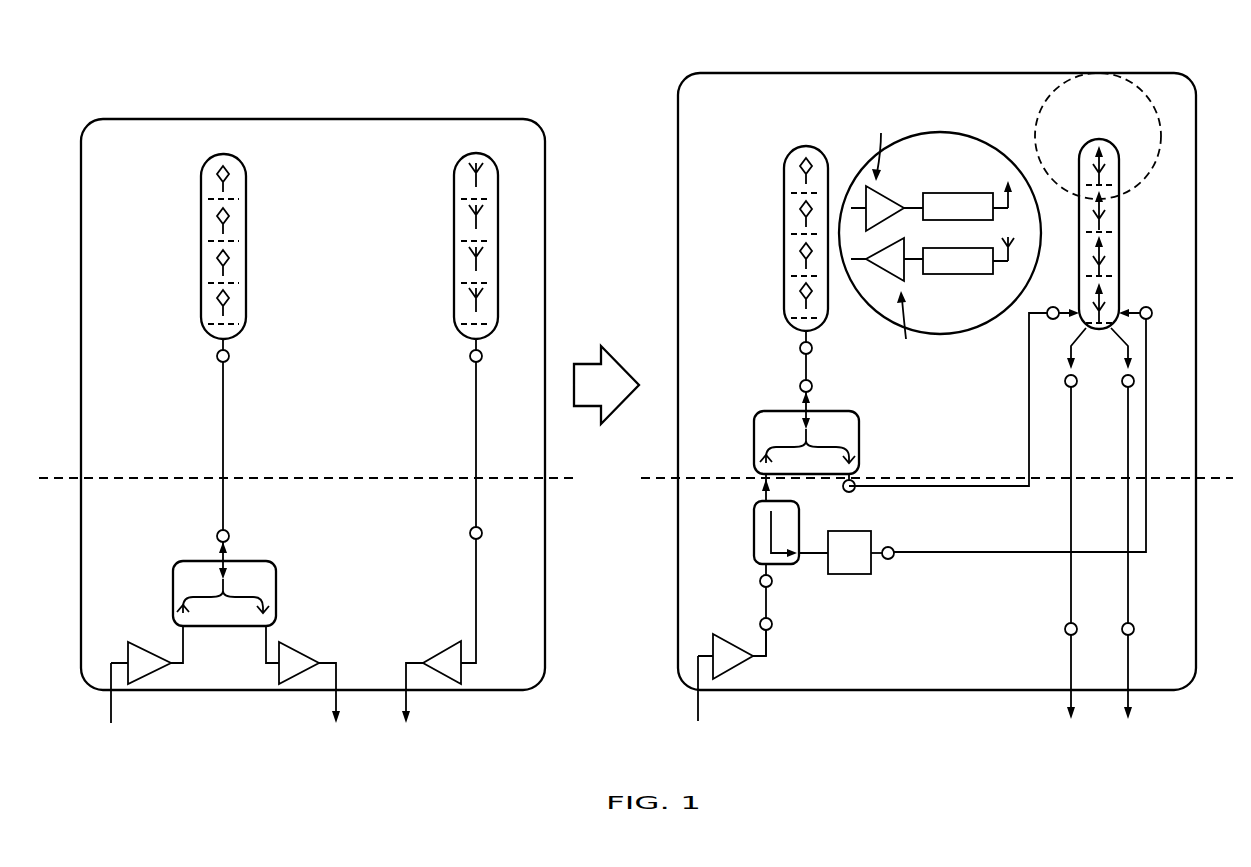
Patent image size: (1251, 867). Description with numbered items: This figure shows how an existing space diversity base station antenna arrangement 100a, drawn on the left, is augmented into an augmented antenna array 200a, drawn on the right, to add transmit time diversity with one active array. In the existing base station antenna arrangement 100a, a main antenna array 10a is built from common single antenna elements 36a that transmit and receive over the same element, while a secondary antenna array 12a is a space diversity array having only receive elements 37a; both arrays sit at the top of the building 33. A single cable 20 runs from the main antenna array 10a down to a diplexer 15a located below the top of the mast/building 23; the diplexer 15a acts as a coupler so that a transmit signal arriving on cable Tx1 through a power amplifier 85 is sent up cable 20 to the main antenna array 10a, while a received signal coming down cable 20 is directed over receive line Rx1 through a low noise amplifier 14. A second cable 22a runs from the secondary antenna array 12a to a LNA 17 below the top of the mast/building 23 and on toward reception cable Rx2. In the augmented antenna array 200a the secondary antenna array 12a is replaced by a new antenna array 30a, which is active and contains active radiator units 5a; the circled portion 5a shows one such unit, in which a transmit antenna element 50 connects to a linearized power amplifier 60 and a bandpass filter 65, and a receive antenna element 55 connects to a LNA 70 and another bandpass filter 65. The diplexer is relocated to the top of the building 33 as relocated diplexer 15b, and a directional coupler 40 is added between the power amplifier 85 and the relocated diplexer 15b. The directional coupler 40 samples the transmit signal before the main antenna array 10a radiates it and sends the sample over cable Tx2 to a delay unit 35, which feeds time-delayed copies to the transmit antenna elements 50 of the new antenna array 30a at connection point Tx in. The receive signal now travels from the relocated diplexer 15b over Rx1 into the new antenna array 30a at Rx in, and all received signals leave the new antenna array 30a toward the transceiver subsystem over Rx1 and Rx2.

The existing base station antenna arrangement 100a is at (260, 102).
The augmented antenna array 200a is at (902, 55).
The main antenna array 10a is at (200, 192).
The secondary antenna array 12a is at (453, 192).
The common single antenna element 36a is at (229, 173).
The receive element 37a is at (476, 182).
The cable 20 is at (222, 427).
The cable 22a is at (475, 427).
The top of building 33 is at (58, 480).
The below top of mast/building 23 is at (60, 482).
The diplexer 15a is at (275, 582).
The relocated diplexer 15b is at (753, 440).
The power amplifier 85 is at (150, 677).
The low noise amplifier 14 is at (279, 679).
The LNA 17 is at (462, 677).
The active radiator unit 5a is at (1015, 150).
The amplifier 60 is at (888, 212).
The bandpass filter 65 is at (982, 194).
The LNA 70 is at (898, 270).
The transmit antenna element 50 is at (1016, 202).
The receive antenna element 55 is at (1018, 245).
The new antenna array 30a is at (1118, 222).
The directional coupler 40 is at (753, 528).
The delay unit 35 is at (870, 532).